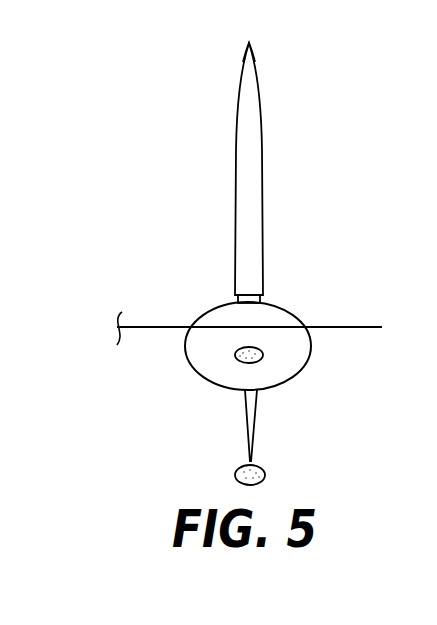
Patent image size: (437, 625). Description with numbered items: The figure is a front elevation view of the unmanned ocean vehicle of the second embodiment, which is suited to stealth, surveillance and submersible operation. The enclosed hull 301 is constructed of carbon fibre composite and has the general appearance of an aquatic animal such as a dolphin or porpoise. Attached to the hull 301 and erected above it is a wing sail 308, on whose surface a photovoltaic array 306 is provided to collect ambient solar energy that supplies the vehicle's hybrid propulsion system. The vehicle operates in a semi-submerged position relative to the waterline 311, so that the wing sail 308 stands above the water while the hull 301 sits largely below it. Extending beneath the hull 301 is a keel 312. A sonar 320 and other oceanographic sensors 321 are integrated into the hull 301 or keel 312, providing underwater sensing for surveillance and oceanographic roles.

The enclosed hull 301 is at (313, 357).
The photovoltaic array 306 is at (263, 178).
The wing sail 308 is at (239, 80).
The waterline 311 is at (355, 326).
The keel 312 is at (257, 431).
The sonar 320 is at (235, 477).
The oceanographic sensors 321 is at (236, 359).